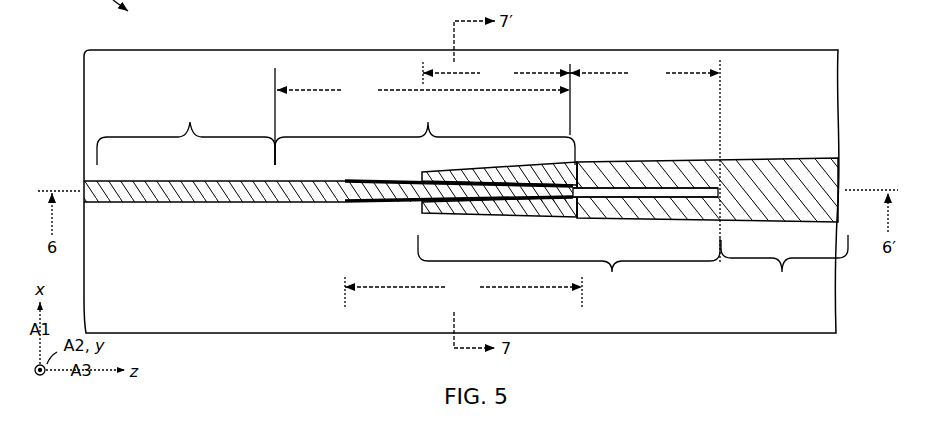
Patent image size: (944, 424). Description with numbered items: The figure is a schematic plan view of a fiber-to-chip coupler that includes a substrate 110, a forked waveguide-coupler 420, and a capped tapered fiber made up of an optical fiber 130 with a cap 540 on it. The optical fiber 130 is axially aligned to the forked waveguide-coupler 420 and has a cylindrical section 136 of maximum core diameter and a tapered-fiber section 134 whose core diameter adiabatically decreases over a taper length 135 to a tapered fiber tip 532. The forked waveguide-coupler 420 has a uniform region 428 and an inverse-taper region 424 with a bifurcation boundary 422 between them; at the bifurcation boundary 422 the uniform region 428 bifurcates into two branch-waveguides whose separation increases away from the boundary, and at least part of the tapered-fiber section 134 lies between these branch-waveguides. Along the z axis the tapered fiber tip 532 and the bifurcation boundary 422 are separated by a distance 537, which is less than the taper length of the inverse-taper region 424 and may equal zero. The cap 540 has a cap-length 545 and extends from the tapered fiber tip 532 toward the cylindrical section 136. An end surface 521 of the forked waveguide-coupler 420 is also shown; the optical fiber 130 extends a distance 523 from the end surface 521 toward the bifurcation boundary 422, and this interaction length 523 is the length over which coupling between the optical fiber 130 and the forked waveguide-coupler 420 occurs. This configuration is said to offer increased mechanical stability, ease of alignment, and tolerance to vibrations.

The substrate 110 is at (641, 50).
The optical fiber 130 is at (245, 205).
The tapered-fiber section 134 is at (425, 130).
The taper length 135 is at (423, 90).
The cylindrical section 136 is at (186, 130).
The forked waveguide-coupler 420 is at (802, 202).
The bifurcation boundary 422 is at (722, 140).
The inverse-taper region 424 is at (569, 268).
The uniform region 428 is at (784, 271).
The end surface 521 is at (419, 176).
The interaction length 523 is at (496, 73).
The tapered fiber tip 532 is at (578, 192).
The distance 537 is at (645, 73).
The cap 540 is at (386, 204).
The cap-length 545 is at (463, 292).